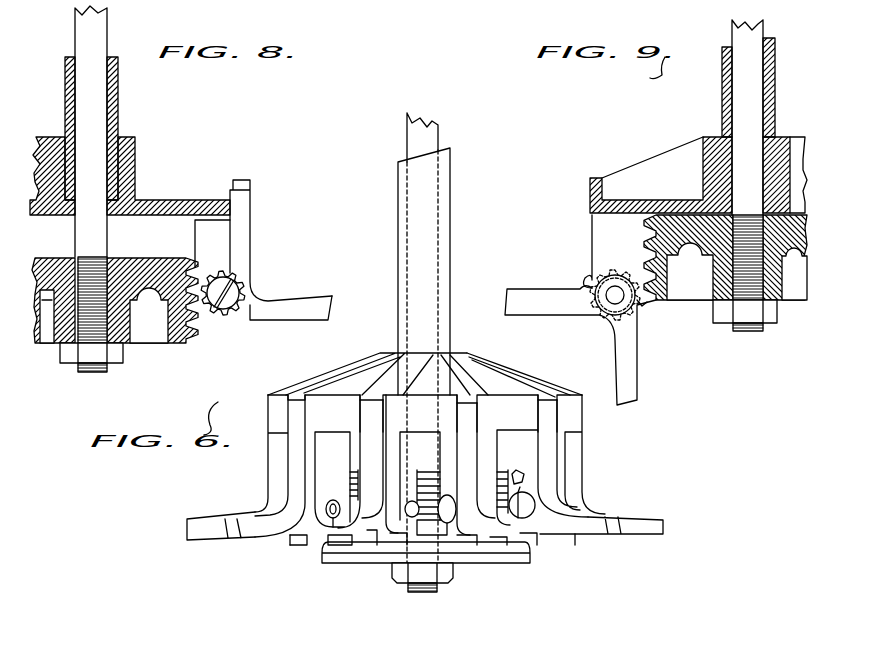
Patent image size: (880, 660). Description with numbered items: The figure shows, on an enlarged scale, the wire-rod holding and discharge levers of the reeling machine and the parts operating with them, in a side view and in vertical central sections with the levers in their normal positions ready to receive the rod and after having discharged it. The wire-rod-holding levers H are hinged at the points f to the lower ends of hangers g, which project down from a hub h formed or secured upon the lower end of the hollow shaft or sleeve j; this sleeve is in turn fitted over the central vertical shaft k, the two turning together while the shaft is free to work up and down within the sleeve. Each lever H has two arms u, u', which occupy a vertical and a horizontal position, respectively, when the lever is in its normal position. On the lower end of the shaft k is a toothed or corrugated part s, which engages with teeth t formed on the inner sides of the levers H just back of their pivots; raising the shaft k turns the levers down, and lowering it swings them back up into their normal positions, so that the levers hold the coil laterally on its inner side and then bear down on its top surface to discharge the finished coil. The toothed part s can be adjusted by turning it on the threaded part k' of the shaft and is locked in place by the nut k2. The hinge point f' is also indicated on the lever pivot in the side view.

In FIG. 8, the central vertical shaft k is at (105, 131).
In FIG. 9, the central vertical shaft k is at (765, 117).
In FIG. 6, the central vertical shaft k is at (438, 338).
In FIG. 8, the hollow shaft or sleeve j is at (118, 107).
In FIG. 9, the hollow shaft or sleeve j is at (722, 75).
In FIG. 6, the hollow shaft or sleeve j is at (425, 180).
In FIG. 8, the hub h is at (236, 182).
In FIG. 9, the hub h is at (636, 200).
In FIG. 6, the hub h is at (498, 352).
In FIG. 8, the arm u is at (281, 240).
In FIG. 9, the arm u is at (552, 294).
In FIG. 6, the arm u is at (482, 382).
In FIG. 8, the arm u' is at (297, 301).
In FIG. 9, the arm u' is at (631, 352).
In FIG. 6, the arm u' is at (442, 514).
In FIG. 8, the hanger g is at (206, 224).
In FIG. 9, the hanger g is at (596, 228).
In FIG. 6, the hanger g is at (400, 534).
In FIG. 8, the hinge point f is at (238, 290).
In FIG. 9, the hinge point f is at (610, 307).
In FIG. 6, the hinge point f is at (472, 531).
In FIG. 6, the gear wheel f' is at (320, 536).
In FIG. 8, the teeth t is at (201, 338).
In FIG. 9, the teeth t is at (646, 306).
In FIG. 6, the teeth t is at (522, 486).
In FIG. 8, the wire-rod-holding lever H is at (250, 306).
In FIG. 9, the wire-rod-holding lever H is at (625, 335).
In FIG. 6, the wire-rod-holding lever H is at (567, 550).
In FIG. 8, the toothed part s is at (128, 266).
In FIG. 9, the toothed part s is at (706, 292).
In FIG. 6, the toothed part s is at (467, 550).
In FIG. 8, the threaded part k' is at (73, 290).
In FIG. 9, the threaded part k' is at (769, 257).
In FIG. 6, the threaded part k' is at (422, 601).
In FIG. 8, the nut k2 is at (81, 356).
In FIG. 9, the nut k2 is at (720, 318).
In FIG. 6, the nut k2 is at (400, 570).